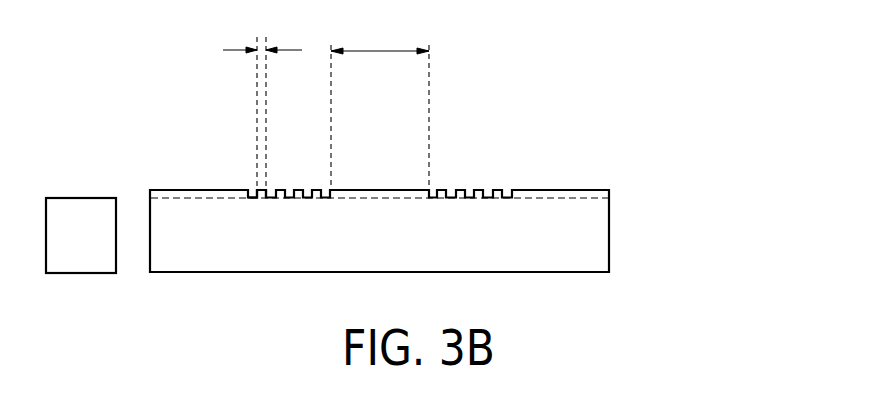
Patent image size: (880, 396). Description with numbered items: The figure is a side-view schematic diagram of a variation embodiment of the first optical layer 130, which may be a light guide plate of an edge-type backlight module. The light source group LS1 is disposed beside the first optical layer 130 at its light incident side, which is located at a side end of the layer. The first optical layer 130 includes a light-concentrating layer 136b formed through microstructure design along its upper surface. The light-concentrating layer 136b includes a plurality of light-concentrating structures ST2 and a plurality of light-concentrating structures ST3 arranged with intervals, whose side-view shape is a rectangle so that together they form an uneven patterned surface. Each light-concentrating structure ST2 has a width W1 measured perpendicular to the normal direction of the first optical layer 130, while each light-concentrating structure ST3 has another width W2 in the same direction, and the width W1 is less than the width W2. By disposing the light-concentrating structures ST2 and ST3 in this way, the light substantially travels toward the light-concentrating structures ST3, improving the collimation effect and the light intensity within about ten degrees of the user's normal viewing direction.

The first optical layer 130 is at (650, 232).
The light-concentrating layer 136b is at (612, 194).
The light source group LS1 is at (82, 217).
The light-concentrating structure ST2 is at (318, 191).
The light-concentrating structure ST3 is at (387, 192).
The width W1 is at (262, 97).
The width W2 is at (380, 105).